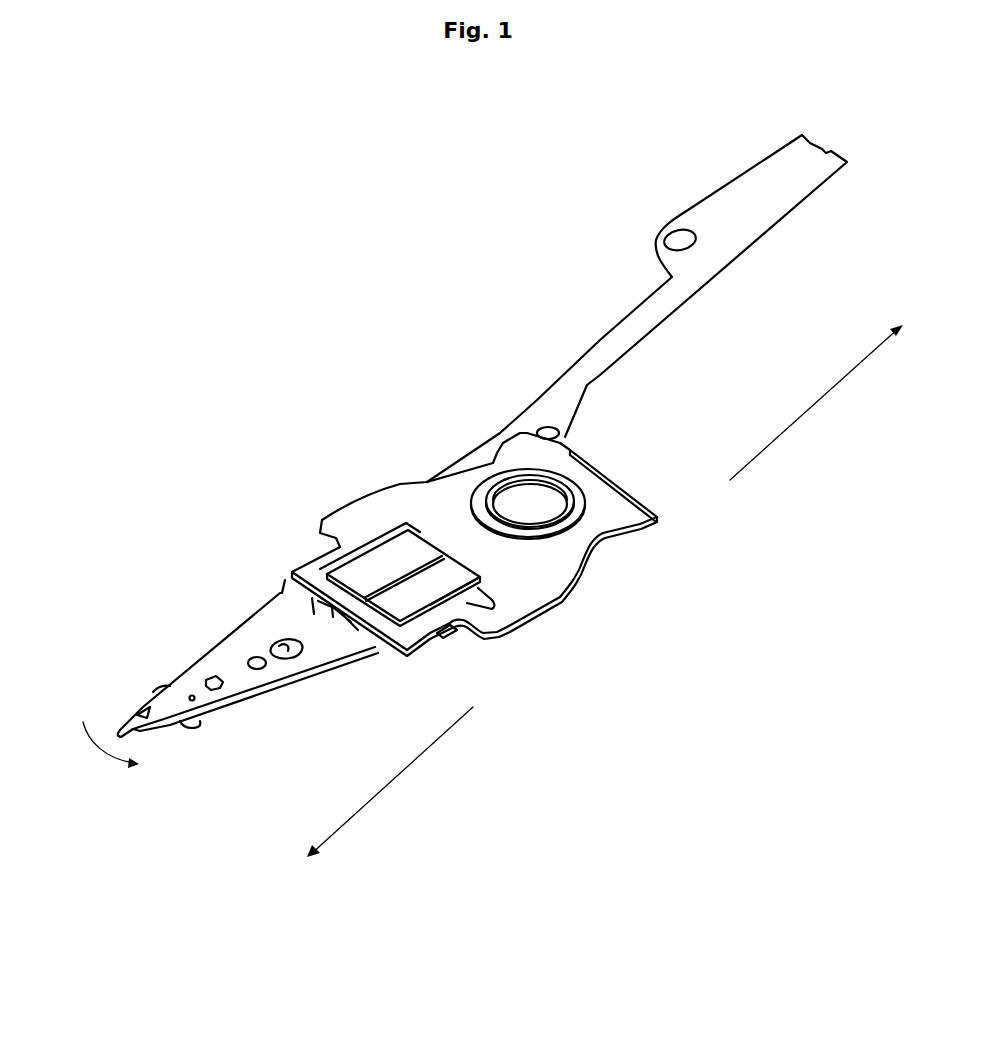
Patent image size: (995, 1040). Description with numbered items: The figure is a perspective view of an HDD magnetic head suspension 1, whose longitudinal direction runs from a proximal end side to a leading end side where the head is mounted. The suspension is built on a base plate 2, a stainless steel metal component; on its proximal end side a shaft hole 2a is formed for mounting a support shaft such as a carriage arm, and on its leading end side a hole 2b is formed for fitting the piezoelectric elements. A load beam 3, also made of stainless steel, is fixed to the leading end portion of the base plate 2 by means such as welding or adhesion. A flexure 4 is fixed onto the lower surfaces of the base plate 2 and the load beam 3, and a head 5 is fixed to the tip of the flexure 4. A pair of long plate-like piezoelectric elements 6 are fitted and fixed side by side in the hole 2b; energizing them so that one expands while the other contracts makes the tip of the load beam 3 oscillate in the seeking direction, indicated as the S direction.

The HDD magnetic head suspension 1 is at (389, 386).
The base plate 2 is at (552, 576).
The shaft hole 2a is at (557, 491).
The hole 2b is at (432, 605).
The load beam 3 is at (252, 637).
The flexure 4 is at (619, 338).
The head 5 is at (175, 727).
The piezoelectric elements 6 is at (410, 597).